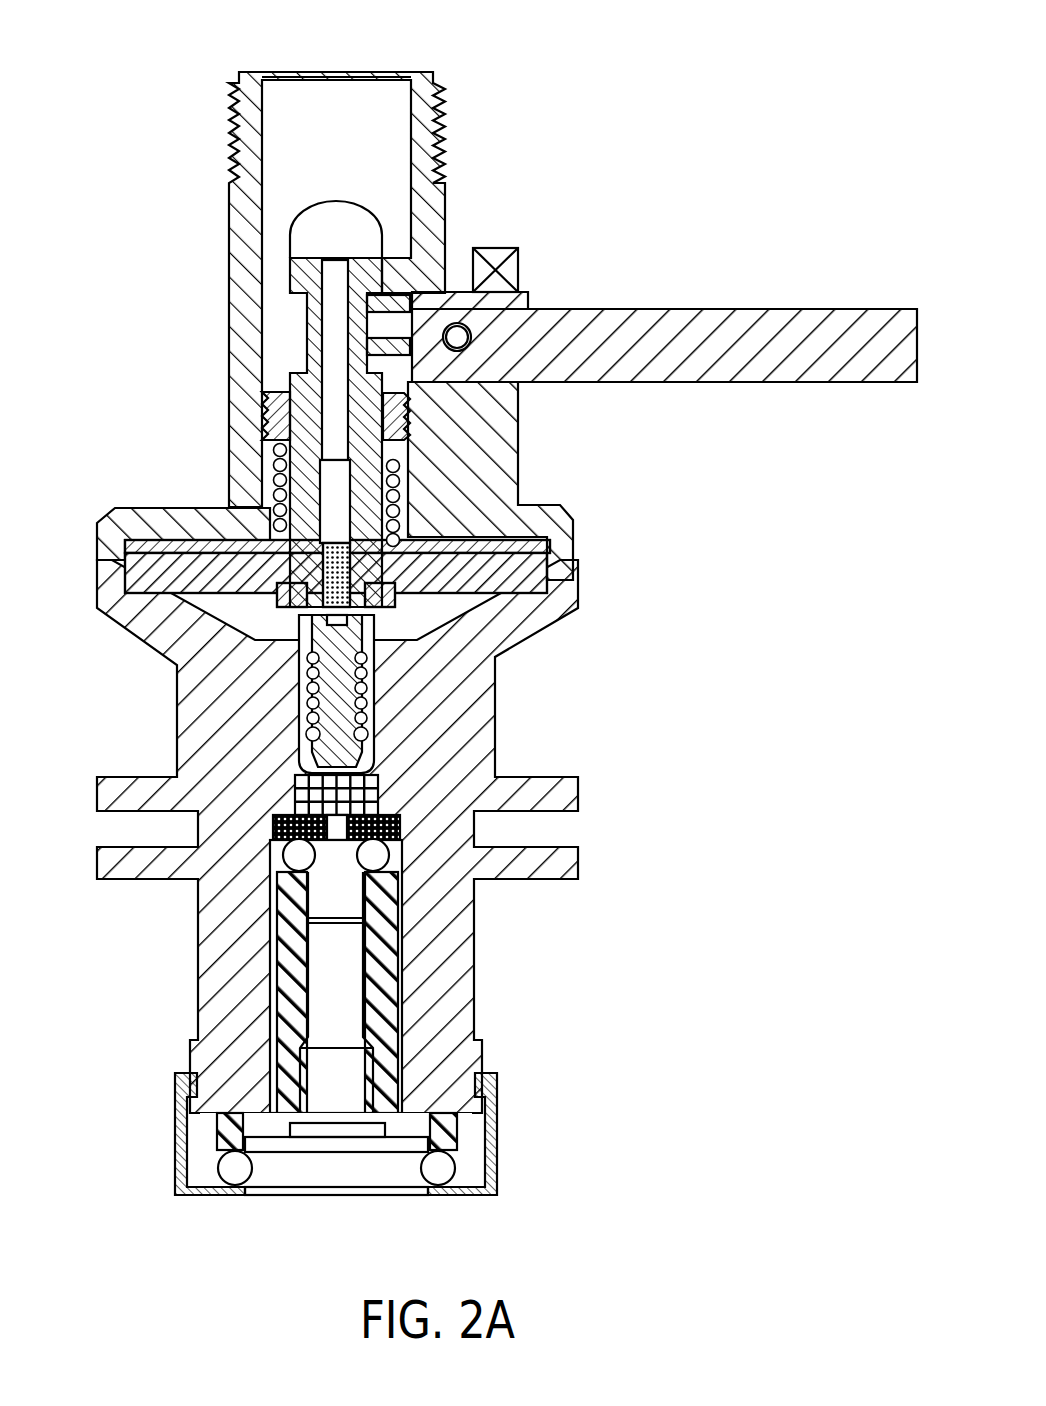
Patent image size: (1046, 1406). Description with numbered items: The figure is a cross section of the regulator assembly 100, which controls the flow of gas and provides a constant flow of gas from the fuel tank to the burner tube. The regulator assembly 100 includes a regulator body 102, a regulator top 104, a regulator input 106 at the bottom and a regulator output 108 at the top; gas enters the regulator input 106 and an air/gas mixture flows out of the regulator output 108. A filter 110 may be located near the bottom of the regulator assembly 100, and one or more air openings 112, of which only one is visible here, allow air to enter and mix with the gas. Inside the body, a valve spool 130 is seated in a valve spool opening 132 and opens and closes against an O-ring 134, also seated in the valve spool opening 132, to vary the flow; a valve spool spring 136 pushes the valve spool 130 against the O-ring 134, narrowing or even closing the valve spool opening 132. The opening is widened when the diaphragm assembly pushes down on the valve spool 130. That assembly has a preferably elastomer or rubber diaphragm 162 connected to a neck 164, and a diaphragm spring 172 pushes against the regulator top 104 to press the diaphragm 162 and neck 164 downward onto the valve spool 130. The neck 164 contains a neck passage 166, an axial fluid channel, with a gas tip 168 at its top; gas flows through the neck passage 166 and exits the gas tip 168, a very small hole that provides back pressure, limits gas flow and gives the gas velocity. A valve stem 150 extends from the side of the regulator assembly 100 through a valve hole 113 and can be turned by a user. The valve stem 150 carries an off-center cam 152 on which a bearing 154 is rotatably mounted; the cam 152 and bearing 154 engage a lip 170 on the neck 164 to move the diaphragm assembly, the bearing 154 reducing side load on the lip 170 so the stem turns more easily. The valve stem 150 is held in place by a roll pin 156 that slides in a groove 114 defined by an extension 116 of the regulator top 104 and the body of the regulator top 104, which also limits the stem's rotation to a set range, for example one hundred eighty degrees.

The regulator assembly 100 is at (660, 160).
The regulator body 102 is at (578, 608).
The regulator top 104 is at (518, 450).
The regulator input 106 is at (410, 1195).
The regulator output 108 is at (398, 72).
The filter 110 is at (413, 813).
The air openings 112 is at (293, 233).
The valve hole 113 is at (467, 257).
The groove 114 is at (470, 240).
The extension 116 is at (518, 283).
The valve spool 130 is at (299, 768).
The valve spool opening 132 is at (400, 825).
The O-ring 134 is at (378, 777).
The valve spool spring 136 is at (365, 728).
The valve stem 150 is at (716, 309).
The cam 152 is at (473, 264).
The bearing 154 is at (420, 203).
The roll pin 156 is at (465, 345).
The diaphragm 162 is at (372, 582).
The neck 164 is at (370, 490).
The neck passage 166 is at (335, 323).
The gas tip 168 is at (340, 262).
The lip 170 is at (363, 260).
The diaphragm spring 172 is at (272, 494).